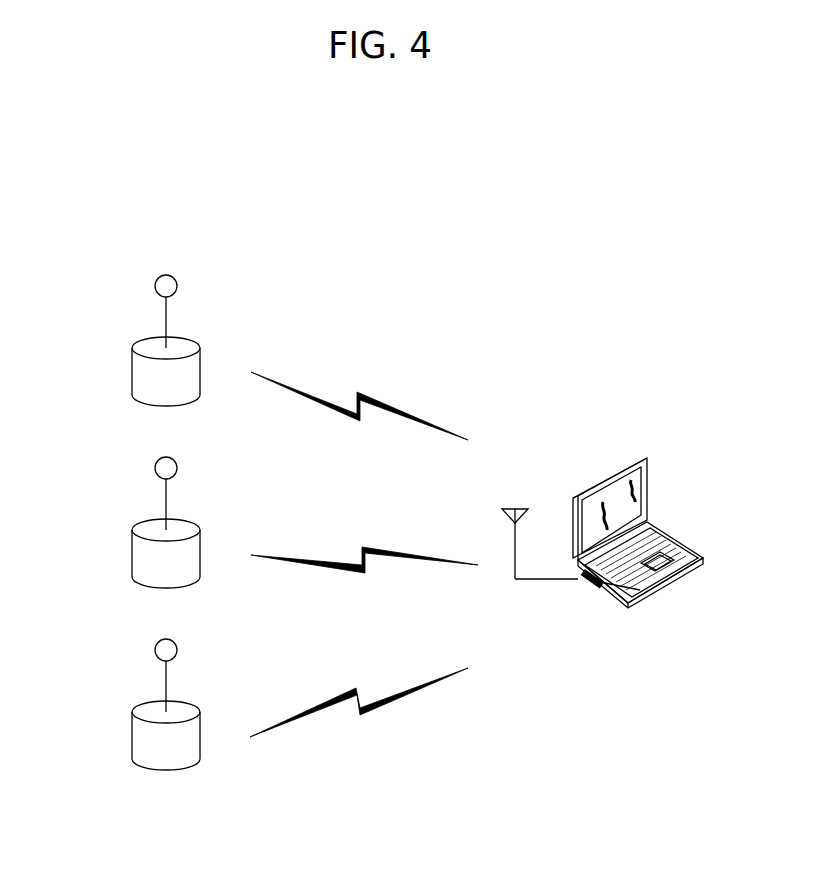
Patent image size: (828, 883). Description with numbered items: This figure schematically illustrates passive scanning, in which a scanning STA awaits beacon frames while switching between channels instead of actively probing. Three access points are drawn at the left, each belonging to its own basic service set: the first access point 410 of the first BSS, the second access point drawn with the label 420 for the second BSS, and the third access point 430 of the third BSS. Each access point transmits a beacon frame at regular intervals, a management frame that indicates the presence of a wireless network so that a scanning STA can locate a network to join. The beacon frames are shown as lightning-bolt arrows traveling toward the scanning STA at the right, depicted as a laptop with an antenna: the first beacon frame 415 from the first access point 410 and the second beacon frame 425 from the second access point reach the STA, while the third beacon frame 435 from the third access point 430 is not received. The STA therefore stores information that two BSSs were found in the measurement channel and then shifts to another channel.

The AP1 410 is at (141, 340).
The beacon frame 1 415 is at (380, 330).
The access point of BSS2 / scanning STA 420 is at (141, 522).
The beacon frame 2 425 is at (382, 512).
The AP3 430 is at (141, 703).
The beacon frame 3 435 is at (382, 745).